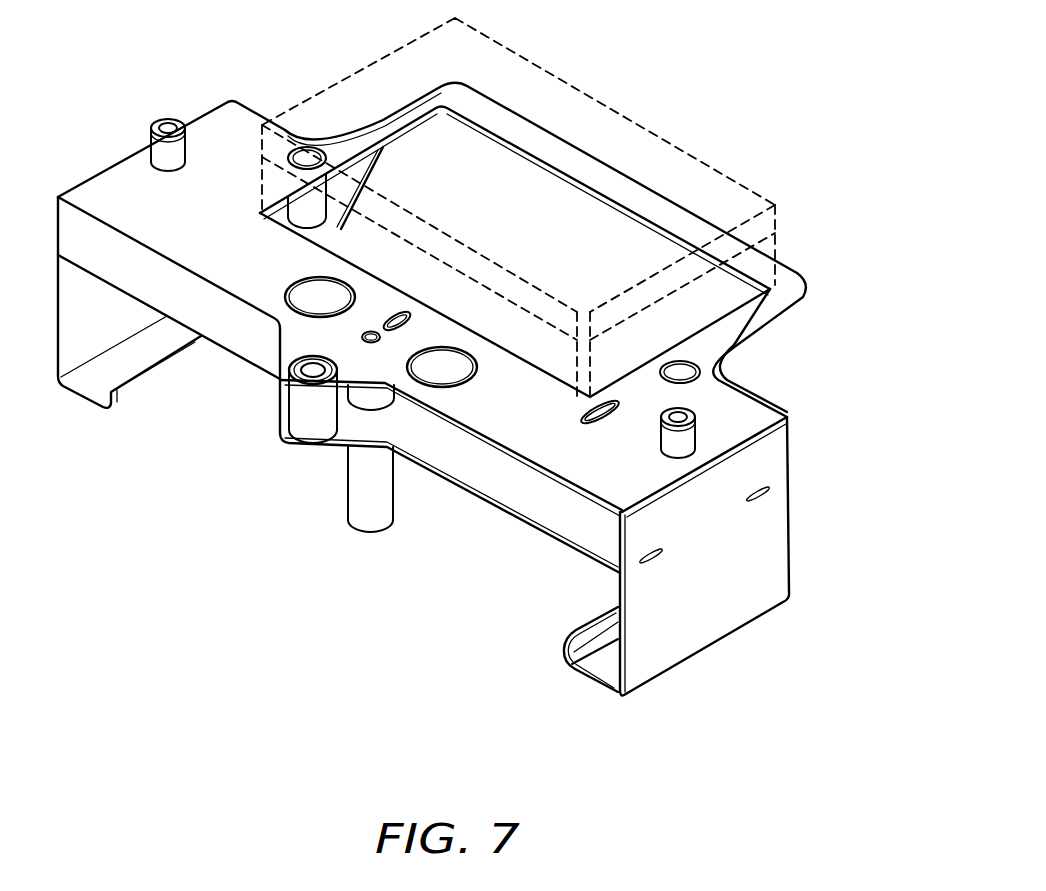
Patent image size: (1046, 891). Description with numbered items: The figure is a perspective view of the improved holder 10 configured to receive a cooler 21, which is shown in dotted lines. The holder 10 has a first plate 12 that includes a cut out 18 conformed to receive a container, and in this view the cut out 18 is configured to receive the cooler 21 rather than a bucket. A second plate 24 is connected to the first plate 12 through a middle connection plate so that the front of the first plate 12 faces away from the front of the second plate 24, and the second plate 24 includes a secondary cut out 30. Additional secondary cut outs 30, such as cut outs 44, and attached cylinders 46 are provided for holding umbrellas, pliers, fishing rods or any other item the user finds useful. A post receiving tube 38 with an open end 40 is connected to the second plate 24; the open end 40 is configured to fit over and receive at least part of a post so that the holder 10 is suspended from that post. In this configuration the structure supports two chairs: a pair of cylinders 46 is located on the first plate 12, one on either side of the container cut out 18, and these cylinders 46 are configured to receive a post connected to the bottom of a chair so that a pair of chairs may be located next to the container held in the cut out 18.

The improved holder 10 is at (464, 356).
The first plate 12 is at (757, 413).
The cut out 18 is at (517, 170).
The cooler 21 is at (683, 150).
The second plate 24 is at (577, 528).
The secondary cut out 30 is at (318, 300).
The post receiving tube 38 is at (347, 509).
The open end 40 is at (366, 545).
The cut outs 44 is at (313, 370).
The cylinders 46 is at (158, 150).